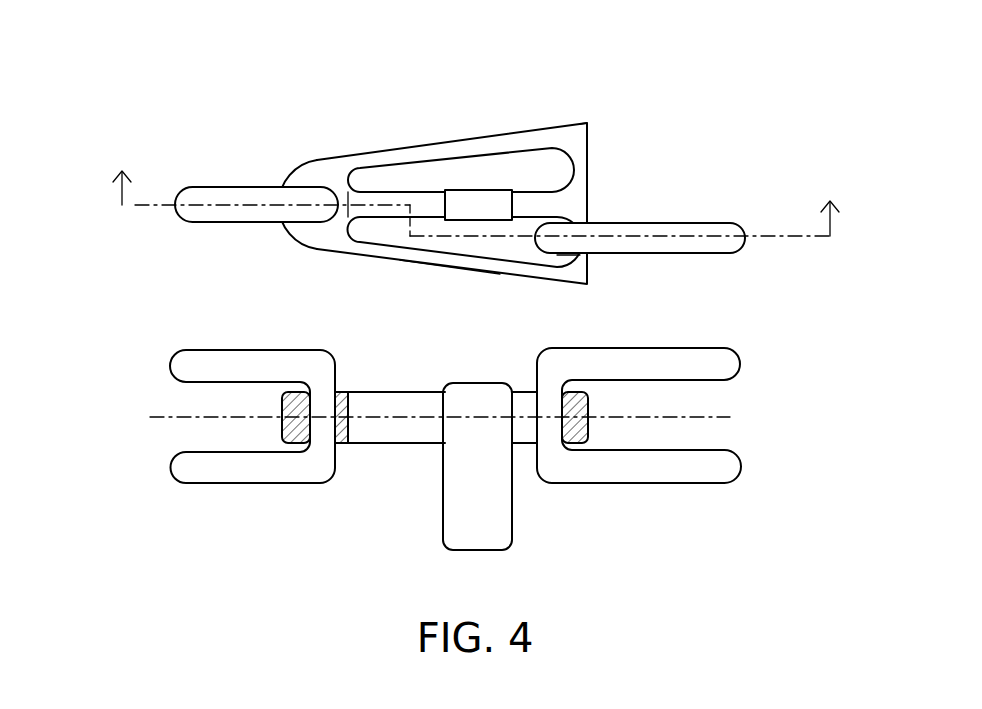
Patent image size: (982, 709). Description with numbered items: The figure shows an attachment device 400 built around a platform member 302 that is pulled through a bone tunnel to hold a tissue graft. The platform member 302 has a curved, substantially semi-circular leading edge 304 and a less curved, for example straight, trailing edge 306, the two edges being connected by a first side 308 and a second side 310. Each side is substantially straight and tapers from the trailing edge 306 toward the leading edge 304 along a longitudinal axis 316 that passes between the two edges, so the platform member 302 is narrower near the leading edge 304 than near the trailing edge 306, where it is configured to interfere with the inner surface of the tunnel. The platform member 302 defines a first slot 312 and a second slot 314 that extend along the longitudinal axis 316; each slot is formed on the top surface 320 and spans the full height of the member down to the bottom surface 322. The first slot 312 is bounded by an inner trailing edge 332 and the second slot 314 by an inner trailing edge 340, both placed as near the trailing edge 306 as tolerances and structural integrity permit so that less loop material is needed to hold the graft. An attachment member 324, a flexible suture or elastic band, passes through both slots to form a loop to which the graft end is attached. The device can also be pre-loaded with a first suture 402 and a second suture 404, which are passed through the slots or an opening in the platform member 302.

The attachment device 400 is at (237, 102).
The first suture 402 is at (212, 198).
The second suture 404 is at (742, 232).
The platform member 302 is at (588, 123).
The leading edge 304 is at (295, 242).
The trailing edge 306 is at (586, 157).
The first side 308 is at (530, 125).
The second side 310 is at (493, 272).
The first slot 312 is at (560, 175).
The second slot 314 is at (532, 255).
The longitudinal axis 316 is at (353, 204).
The top surface 320 is at (377, 392).
The bottom surface 322 is at (382, 445).
The attachment member 324 is at (475, 190).
The inner trailing edge 332 is at (575, 148).
The inner trailing edge 340 is at (560, 257).